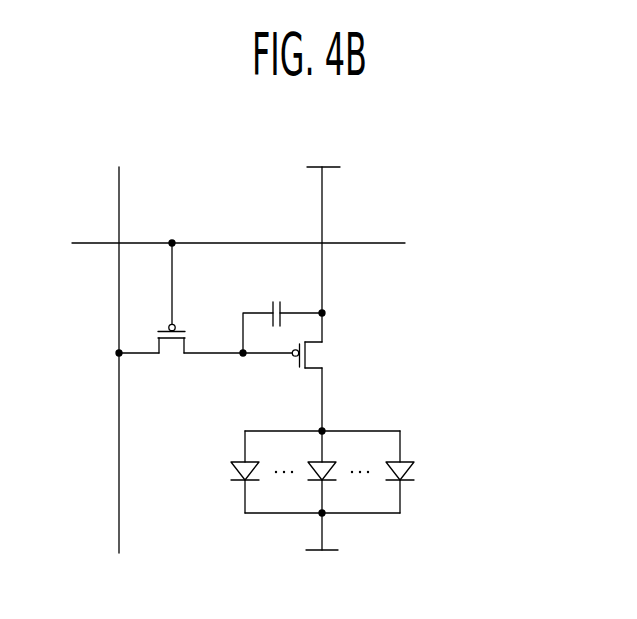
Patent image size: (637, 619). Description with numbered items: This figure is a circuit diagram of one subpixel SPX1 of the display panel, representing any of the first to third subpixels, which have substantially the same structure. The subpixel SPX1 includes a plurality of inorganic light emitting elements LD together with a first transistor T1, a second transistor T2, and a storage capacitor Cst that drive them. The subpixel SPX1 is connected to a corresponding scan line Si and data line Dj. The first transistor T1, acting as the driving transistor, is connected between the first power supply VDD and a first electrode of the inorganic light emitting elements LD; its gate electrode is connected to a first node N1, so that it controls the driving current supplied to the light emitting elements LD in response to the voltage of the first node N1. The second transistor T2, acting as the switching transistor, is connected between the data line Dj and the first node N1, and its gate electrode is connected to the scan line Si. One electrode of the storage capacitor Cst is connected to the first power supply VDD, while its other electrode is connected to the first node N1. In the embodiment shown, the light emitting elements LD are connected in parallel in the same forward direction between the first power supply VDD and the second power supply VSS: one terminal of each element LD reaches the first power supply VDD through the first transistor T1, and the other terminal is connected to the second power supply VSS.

The subpixel SPX1 is at (401, 201).
The data line Dj is at (121, 338).
The scan line Si is at (227, 242).
The first power supply VDD is at (323, 237).
The second transistor T2 is at (179, 312).
The first node N1 is at (242, 374).
The storage capacitor Cst is at (282, 313).
The first transistor T1 is at (293, 386).
The inorganic light emitting element LD is at (338, 472).
The second power supply VSS is at (322, 551).